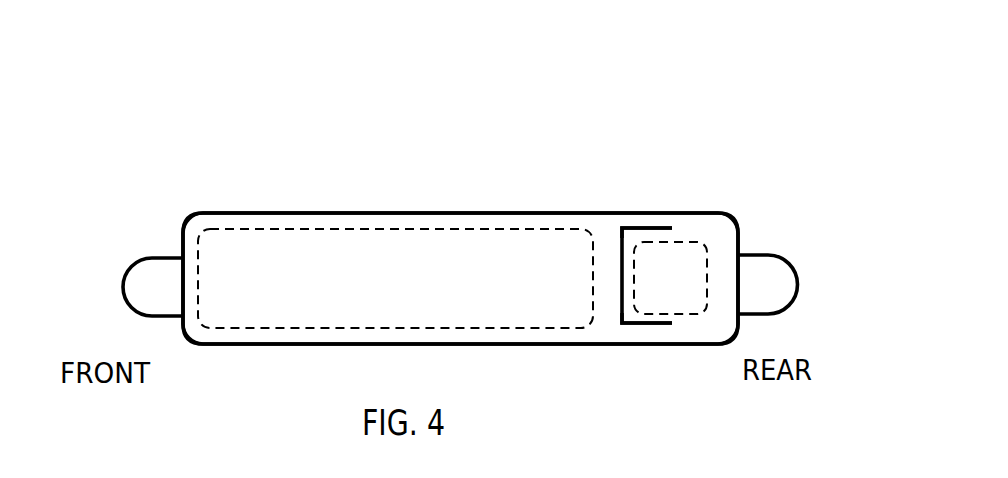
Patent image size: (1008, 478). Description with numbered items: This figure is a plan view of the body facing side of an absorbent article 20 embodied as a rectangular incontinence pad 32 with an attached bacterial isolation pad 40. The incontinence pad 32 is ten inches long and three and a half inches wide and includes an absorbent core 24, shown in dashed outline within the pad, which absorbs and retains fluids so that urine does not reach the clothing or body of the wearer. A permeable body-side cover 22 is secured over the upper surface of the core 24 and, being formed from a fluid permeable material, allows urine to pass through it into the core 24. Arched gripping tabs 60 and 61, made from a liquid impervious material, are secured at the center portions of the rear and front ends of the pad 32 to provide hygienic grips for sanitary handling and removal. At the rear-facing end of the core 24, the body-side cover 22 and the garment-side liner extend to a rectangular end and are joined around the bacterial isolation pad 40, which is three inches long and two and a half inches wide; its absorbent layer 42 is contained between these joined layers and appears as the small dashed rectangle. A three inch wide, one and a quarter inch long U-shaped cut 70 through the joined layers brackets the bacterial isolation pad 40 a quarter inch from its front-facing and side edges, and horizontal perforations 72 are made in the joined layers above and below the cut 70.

The absorbent article 20 is at (188, 139).
The permeable body-side cover 22 is at (602, 245).
The absorbent core 24 is at (398, 273).
The incontinence pad 32 is at (279, 194).
The bacterial isolation pad 40 is at (698, 127).
The absorbent layer 42 is at (685, 280).
The gripping tab 60 is at (797, 285).
The gripping tab 61 is at (140, 253).
The U-shaped cut 70 is at (620, 298).
The horizontal perforations 72 is at (673, 228).